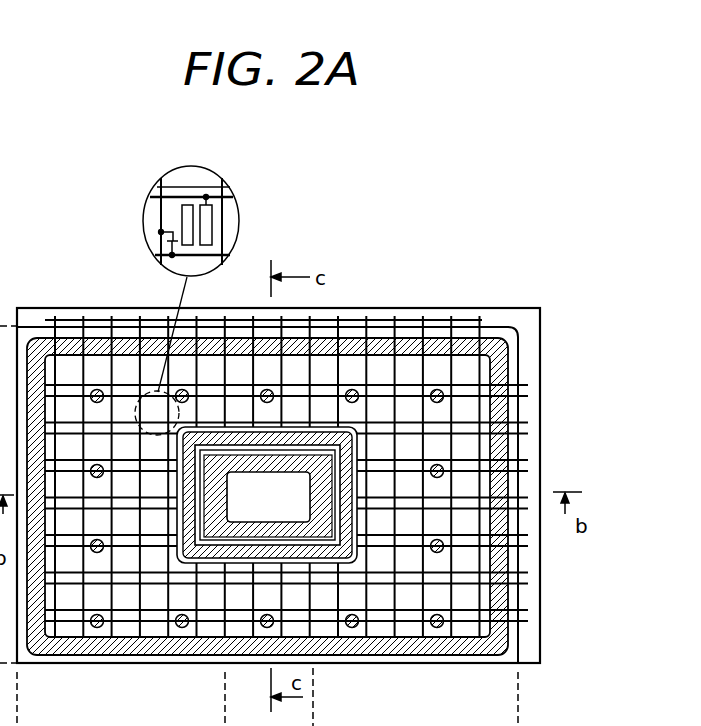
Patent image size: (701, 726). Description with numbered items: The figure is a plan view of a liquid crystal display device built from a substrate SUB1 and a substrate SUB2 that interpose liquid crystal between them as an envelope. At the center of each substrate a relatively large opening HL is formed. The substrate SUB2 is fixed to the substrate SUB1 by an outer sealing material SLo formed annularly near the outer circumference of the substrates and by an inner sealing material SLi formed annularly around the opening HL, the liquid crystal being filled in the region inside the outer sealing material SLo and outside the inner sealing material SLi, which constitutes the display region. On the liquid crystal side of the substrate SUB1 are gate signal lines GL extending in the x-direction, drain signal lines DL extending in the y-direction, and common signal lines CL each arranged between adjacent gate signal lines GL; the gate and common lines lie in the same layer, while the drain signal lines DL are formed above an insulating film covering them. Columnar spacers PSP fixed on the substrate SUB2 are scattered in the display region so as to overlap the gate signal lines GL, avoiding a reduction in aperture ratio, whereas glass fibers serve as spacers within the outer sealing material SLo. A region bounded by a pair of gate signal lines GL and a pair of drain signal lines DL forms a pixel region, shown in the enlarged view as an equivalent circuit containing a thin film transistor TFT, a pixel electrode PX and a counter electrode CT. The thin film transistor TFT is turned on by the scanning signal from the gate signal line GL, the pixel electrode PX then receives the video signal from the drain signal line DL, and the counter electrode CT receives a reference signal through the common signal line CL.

The common signal line CL is at (525, 387).
The pixel electrode PX is at (180, 217).
The drain signal line DL is at (424, 318).
The counter electrode CT is at (208, 222).
The gate signal line GL is at (525, 397).
The thin film transistor TFT is at (152, 250).
The inner sealing material SLi is at (297, 425).
The outer sealing material SLo is at (508, 352).
The substrate SUB2 is at (518, 457).
The opening HL is at (268, 497).
The columnar spacer PSP is at (445, 612).
The substrate SUB1 is at (540, 643).